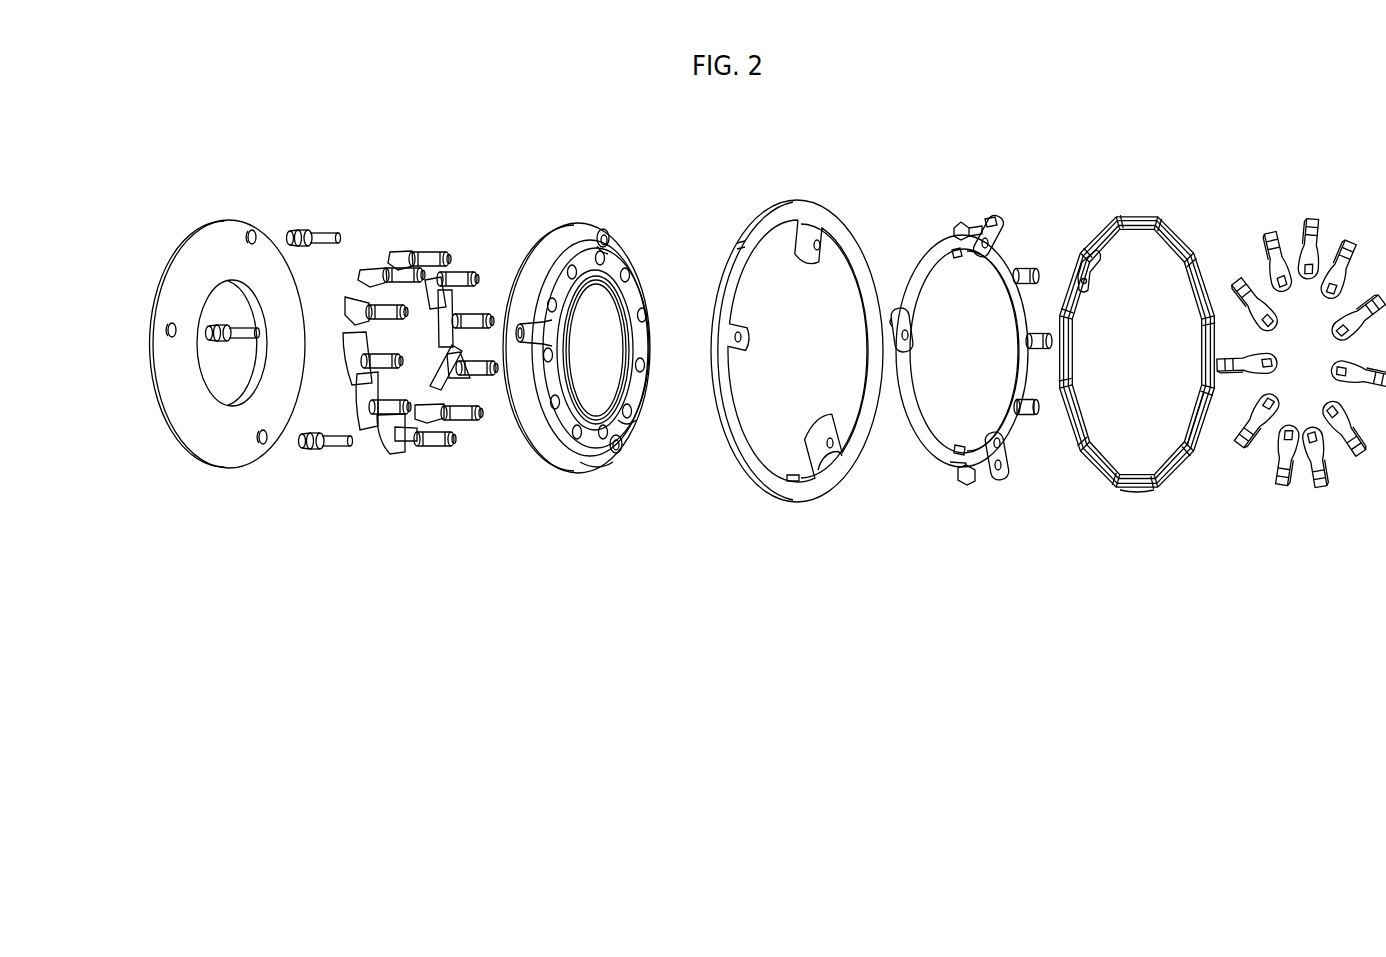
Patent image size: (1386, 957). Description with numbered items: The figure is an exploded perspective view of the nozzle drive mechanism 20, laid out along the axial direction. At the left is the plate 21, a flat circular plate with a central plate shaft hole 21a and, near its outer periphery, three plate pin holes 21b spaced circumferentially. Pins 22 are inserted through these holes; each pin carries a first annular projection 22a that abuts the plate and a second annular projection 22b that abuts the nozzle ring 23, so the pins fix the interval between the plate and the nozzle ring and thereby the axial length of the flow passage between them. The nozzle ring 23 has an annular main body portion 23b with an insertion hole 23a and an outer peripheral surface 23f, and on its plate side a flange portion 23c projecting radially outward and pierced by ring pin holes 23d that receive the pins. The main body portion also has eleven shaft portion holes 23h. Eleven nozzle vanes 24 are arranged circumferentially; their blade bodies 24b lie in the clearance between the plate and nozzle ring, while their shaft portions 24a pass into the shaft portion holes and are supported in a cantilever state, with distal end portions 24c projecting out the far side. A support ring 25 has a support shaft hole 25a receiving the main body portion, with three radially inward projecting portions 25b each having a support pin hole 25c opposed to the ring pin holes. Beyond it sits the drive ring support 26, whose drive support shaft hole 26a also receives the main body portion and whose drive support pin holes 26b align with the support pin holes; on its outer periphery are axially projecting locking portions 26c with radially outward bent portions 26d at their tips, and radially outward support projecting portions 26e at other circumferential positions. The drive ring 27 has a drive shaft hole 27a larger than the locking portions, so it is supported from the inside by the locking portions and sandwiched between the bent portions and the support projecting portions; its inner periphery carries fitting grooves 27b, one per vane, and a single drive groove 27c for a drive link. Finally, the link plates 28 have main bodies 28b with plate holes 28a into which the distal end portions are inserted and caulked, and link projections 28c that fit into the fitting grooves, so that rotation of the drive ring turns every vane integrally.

The nozzle drive mechanism 20 is at (140, 137).
The plate 21 is at (232, 219).
The plate shaft hole 21a is at (222, 404).
The plate pin holes 21b is at (268, 448).
The pins 22 is at (317, 230).
The first annular projection 22a is at (318, 452).
The second annular projection 22b is at (327, 450).
The nozzle ring 23 is at (565, 223).
The insertion hole 23a is at (621, 442).
The main body portion 23b is at (572, 228).
The flange portion 23c is at (593, 465).
The ring pin holes 23d is at (622, 455).
The outer peripheral surface 23f is at (553, 278).
The shaft portion holes 23h is at (646, 313).
The nozzle vanes 24 is at (400, 251).
The shaft portions 24a is at (430, 452).
The blade bodies 24b is at (393, 452).
The distal end portions 24c is at (467, 443).
The support ring 25 is at (790, 200).
The support shaft hole 25a is at (794, 482).
The projecting portions 25b is at (845, 450).
The support pin holes 25c is at (832, 452).
The drive ring support 26 is at (935, 245).
The drive support shaft hole 26a is at (966, 466).
The drive support pin holes 26b is at (997, 468).
The locking portions 26c is at (1031, 417).
The bent portions 26d is at (1040, 414).
The support projecting portions 26e is at (987, 222).
The drive ring 27 is at (1128, 214).
The drive shaft hole 27a is at (1143, 492).
The fitting grooves 27b is at (1196, 450).
The drive groove 27c is at (1082, 264).
The link plates 28 is at (1308, 220).
The plate holes 28a is at (1281, 480).
The main bodies 28b is at (1301, 480).
The link projection 28c is at (1322, 480).